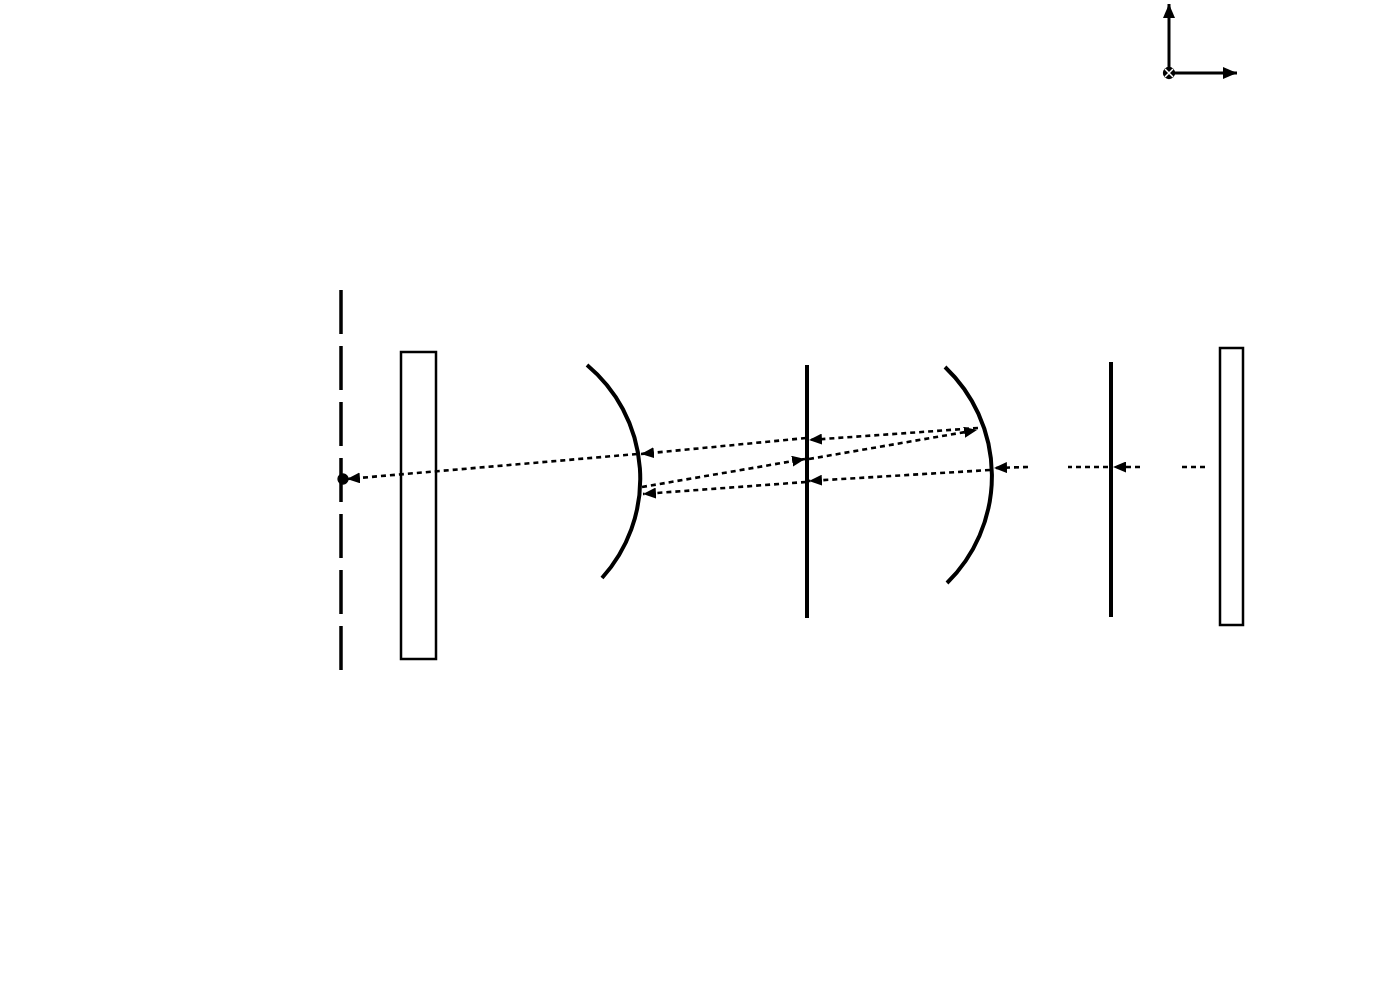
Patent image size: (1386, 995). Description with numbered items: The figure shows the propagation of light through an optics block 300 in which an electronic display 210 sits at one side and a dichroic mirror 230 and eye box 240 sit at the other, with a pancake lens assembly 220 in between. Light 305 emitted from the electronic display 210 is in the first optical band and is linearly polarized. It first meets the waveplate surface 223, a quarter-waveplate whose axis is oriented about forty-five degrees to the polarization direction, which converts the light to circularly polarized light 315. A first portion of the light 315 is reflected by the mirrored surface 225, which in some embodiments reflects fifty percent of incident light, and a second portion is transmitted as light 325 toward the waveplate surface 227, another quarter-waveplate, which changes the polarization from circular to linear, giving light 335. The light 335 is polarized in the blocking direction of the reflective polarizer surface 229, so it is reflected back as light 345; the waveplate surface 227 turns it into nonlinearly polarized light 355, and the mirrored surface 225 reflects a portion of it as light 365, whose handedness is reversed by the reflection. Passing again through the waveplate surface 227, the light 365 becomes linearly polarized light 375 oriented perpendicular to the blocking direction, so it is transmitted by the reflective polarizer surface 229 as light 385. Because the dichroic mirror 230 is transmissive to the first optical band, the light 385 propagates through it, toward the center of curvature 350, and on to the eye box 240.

The optics block 300 is at (820, 27).
The pancake lens assembly 220 is at (1138, 185).
The reflective polarizer surface 229 is at (595, 383).
The waveplate surface 227 is at (803, 372).
The mirrored surface 225 is at (948, 378).
The waveplate surface 223 is at (1108, 362).
The electronic display 210 is at (1226, 348).
The dichroic mirror 230 is at (414, 352).
The center of curvature 350 is at (333, 483).
The eye box 240 is at (347, 668).
The light 305 is at (1159, 467).
The light 315 is at (1051, 467).
The light 325 is at (899, 487).
The light 335 is at (724, 498).
The light 345 is at (723, 472).
The light 355 is at (893, 445).
The light 365 is at (893, 429).
The light 375 is at (723, 438).
The light 385 is at (492, 458).